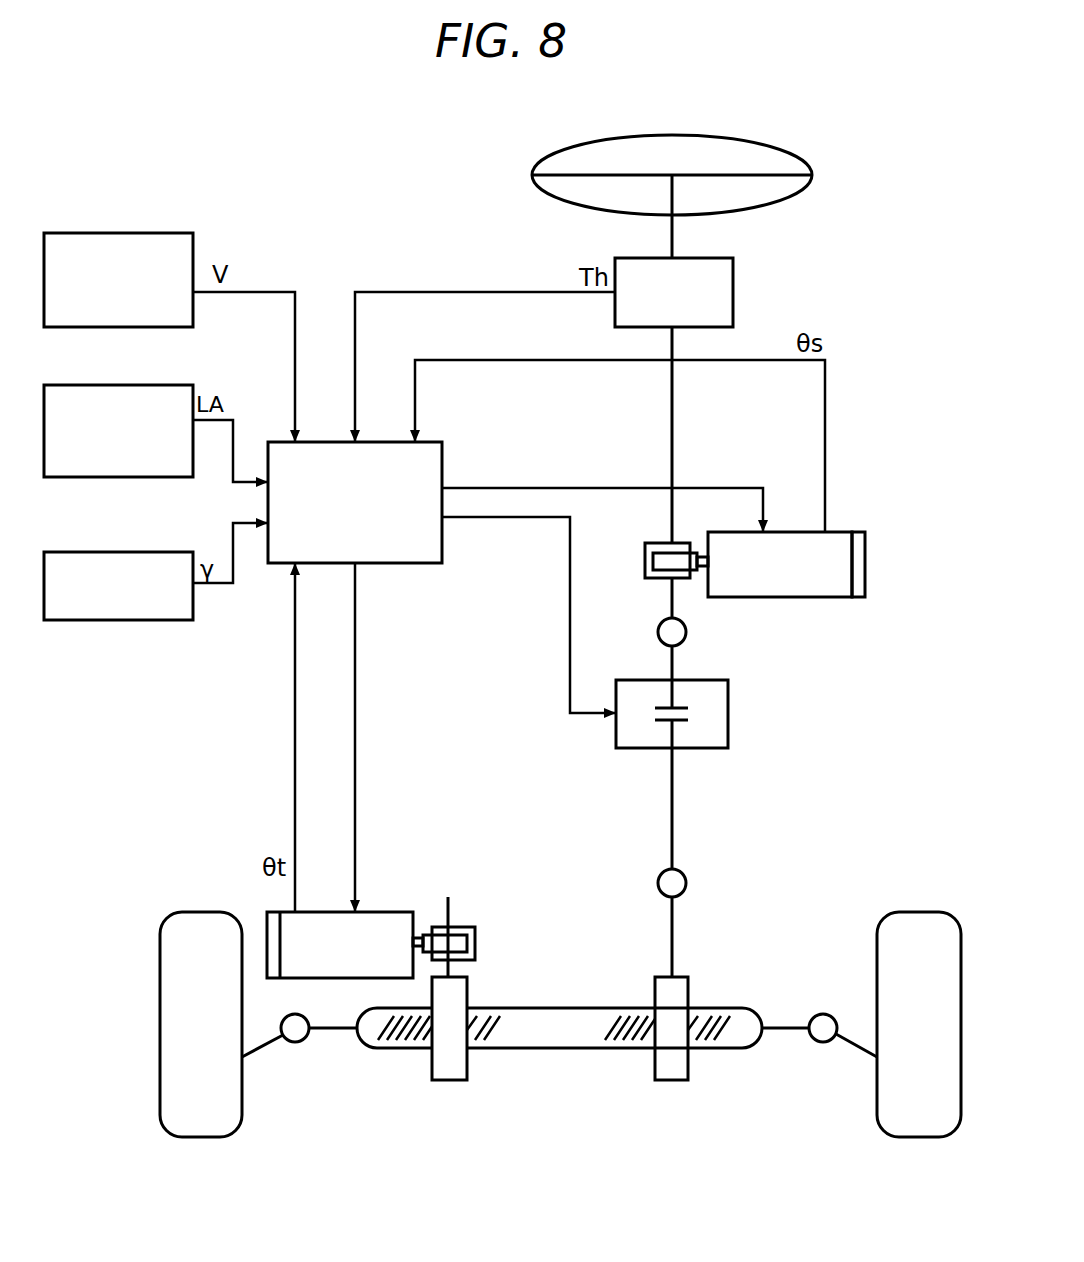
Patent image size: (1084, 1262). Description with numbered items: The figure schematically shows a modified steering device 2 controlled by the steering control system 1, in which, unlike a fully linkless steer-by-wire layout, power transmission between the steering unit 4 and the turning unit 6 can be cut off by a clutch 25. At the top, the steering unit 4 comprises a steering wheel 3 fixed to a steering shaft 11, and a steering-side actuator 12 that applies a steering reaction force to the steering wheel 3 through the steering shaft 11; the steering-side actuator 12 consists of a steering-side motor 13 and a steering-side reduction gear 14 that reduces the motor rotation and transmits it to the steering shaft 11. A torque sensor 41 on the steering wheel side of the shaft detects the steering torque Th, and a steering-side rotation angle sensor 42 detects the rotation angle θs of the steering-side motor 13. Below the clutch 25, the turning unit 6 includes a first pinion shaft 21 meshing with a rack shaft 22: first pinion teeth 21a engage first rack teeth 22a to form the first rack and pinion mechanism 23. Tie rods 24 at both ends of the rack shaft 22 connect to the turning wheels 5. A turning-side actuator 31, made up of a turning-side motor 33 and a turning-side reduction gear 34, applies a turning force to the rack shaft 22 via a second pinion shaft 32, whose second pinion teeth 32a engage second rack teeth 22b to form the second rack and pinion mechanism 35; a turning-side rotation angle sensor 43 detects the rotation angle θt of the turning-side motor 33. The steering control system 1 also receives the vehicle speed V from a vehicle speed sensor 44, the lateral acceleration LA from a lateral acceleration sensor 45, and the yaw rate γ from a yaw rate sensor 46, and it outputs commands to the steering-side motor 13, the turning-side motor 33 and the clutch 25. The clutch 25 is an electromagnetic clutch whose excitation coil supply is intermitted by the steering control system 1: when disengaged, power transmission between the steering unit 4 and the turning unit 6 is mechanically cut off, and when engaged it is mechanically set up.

The steering control system 1 is at (432, 563).
The steering device 2 is at (835, 140).
The steering wheel 3 is at (758, 138).
The steering unit 4 is at (855, 473).
The turning wheels 5 is at (242, 1102).
The turning unit 6 is at (808, 893).
The steering shaft 11 is at (675, 233).
The steering-side actuator 12 is at (740, 636).
The steering-side motor 13 is at (795, 600).
The steering-side reduction gear 14 is at (642, 560).
The first pinion shaft 21 is at (672, 946).
The first pinion teeth 21a is at (672, 1082).
The rack shaft 22 is at (556, 1050).
The first rack teeth 22a is at (632, 1042).
The second rack teeth 22b is at (490, 1042).
The first rack and pinion mechanism 23 is at (630, 1108).
The tie rods 24 is at (326, 1034).
The clutch 25 is at (728, 720).
The turning-side actuator 31 is at (495, 882).
The second pinion shaft 32 is at (450, 903).
The second pinion teeth 32a is at (450, 1082).
The turning-side motor 33 is at (388, 912).
The turning-side reduction gear 34 is at (482, 950).
The second rack and pinion mechanism 35 is at (428, 1058).
The torque sensor 41 is at (735, 290).
The steering-side rotation angle sensor 42 is at (857, 600).
The turning-side rotation angle sensor 43 is at (267, 962).
The vehicle speed sensor 44 is at (120, 233).
The lateral acceleration sensor 45 is at (120, 385).
The yaw rate sensor 46 is at (120, 552).